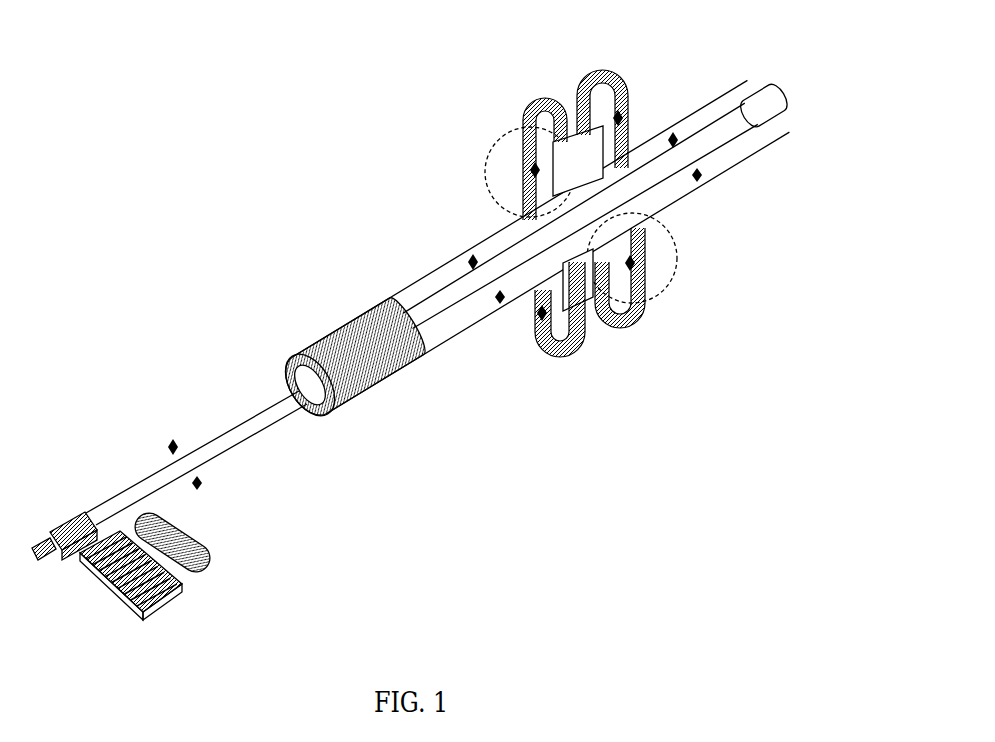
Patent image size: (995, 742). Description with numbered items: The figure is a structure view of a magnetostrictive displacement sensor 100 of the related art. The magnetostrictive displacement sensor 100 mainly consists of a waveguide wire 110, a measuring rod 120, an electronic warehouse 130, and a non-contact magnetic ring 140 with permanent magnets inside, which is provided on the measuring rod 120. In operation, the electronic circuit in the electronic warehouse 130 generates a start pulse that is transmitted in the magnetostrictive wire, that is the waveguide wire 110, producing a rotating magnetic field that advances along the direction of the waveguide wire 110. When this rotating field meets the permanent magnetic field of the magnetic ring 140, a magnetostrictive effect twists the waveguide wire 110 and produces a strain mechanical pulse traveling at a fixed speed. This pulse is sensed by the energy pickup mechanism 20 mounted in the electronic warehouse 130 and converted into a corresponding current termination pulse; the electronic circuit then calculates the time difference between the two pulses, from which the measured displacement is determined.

The magnetostrictive displacement sensor 100 is at (92, 102).
The waveguide wire 110 is at (257, 408).
The measuring rod 120 is at (505, 158).
The electronic warehouse 130 is at (748, 92).
The non-contact magnetic ring 140 is at (537, 100).
The energy pickup mechanism 20 is at (205, 572).